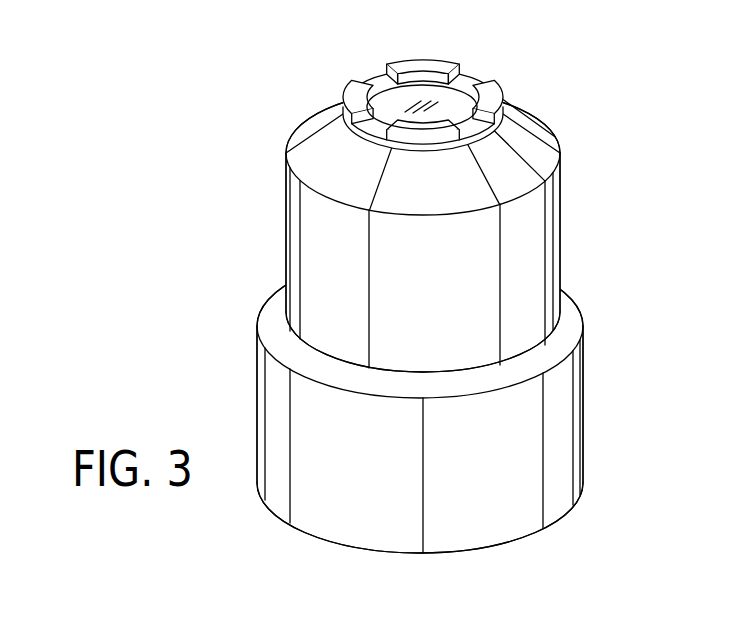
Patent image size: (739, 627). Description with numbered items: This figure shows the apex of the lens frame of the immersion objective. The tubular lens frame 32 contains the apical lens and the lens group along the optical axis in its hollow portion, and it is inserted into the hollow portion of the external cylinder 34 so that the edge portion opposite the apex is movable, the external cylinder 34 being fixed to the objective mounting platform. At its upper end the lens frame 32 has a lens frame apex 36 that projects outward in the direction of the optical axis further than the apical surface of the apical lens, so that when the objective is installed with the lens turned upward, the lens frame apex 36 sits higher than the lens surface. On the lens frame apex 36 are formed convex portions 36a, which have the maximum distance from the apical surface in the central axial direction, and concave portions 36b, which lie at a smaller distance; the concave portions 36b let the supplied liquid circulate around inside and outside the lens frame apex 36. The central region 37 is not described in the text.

The lens frame 32 is at (549, 247).
The external cylinder 34 is at (581, 424).
The lens frame apex 36 is at (508, 106).
The convex portions 36a is at (496, 91).
The concave portions 36b is at (487, 134).
The opening 37 is at (470, 84).